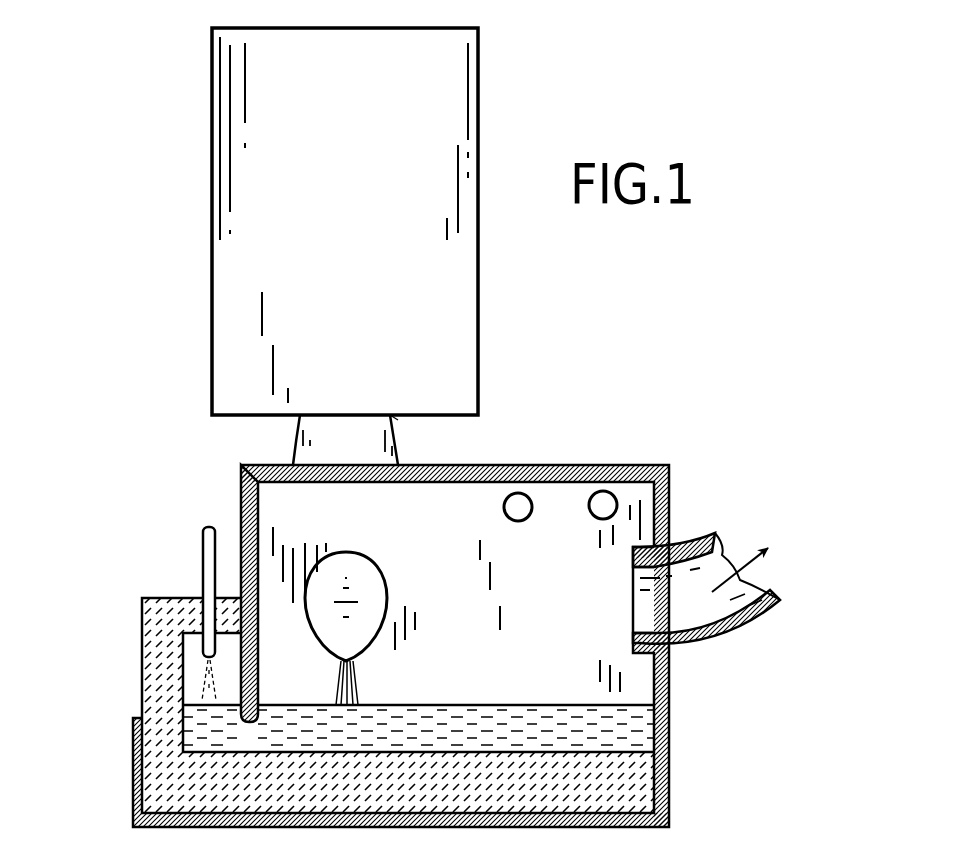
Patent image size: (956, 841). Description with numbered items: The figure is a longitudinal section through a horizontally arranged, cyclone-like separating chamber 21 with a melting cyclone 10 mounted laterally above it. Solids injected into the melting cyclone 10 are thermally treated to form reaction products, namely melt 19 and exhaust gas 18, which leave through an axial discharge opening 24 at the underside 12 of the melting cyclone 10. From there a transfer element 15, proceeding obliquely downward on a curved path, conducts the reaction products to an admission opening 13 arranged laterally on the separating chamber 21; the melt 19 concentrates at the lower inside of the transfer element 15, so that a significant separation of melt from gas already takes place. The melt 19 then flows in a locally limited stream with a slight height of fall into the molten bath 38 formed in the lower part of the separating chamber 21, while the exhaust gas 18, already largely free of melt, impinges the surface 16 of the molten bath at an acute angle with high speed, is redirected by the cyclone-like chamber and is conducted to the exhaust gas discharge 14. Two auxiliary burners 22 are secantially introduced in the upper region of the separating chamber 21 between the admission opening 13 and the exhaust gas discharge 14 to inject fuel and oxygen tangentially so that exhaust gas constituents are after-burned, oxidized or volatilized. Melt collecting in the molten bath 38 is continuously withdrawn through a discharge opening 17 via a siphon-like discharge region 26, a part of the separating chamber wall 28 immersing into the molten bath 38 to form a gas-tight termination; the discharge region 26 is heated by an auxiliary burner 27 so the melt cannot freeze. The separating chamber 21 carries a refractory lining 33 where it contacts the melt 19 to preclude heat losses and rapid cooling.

The melting cyclone 10 is at (362, 171).
The underside of the melting cyclone 12 is at (226, 418).
The admission opening 13 is at (355, 562).
The exhaust gas discharge 14 is at (633, 610).
The transfer element 15 is at (398, 453).
The surface of the molten bath 16 is at (508, 703).
The discharge opening 17 is at (183, 699).
The exhaust gas 18 is at (738, 574).
The melt 19 is at (356, 692).
The separating chamber 21 is at (476, 603).
The auxiliary burners 22 is at (527, 519).
The axial discharge opening 24 is at (347, 413).
The discharge region 26 is at (196, 662).
The auxiliary burner 27 is at (205, 543).
The separating chamber wall 28 is at (260, 673).
The refractory lining 33 is at (640, 792).
The molten bath 38 is at (640, 726).